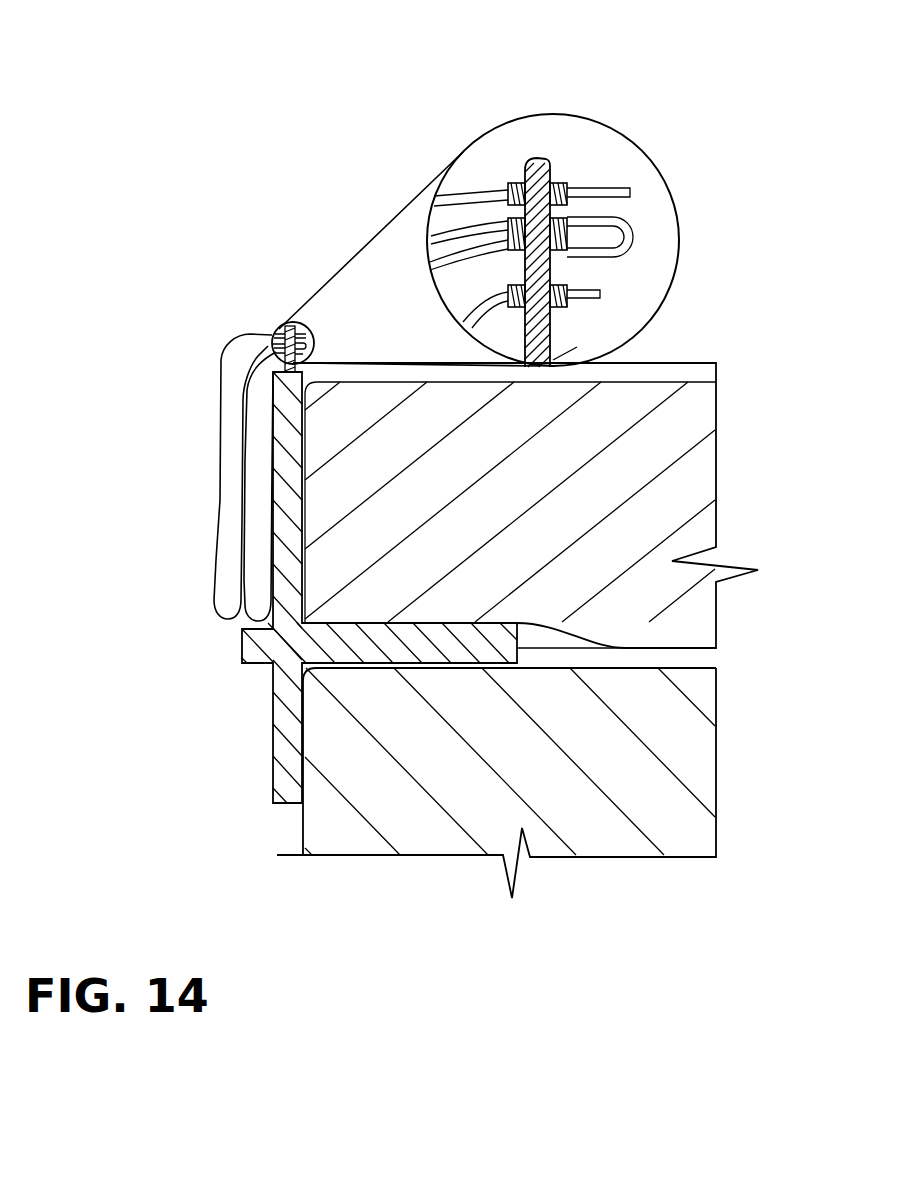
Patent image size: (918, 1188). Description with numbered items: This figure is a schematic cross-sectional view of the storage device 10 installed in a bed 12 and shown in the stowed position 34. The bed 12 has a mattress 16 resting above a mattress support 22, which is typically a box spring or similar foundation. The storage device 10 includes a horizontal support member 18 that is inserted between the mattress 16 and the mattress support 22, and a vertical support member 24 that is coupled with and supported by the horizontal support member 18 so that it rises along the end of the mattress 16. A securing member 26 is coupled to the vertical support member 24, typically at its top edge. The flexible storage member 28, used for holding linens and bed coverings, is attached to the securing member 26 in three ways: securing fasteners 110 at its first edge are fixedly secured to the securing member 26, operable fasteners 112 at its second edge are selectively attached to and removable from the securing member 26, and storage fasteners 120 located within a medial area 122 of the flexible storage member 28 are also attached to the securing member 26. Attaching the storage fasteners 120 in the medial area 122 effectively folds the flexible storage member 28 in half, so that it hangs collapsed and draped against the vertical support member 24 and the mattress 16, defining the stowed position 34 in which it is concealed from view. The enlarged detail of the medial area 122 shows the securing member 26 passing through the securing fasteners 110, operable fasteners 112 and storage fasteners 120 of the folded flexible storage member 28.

The storage device 10 is at (465, 587).
The bed 12 is at (647, 807).
The mattress 16 is at (553, 507).
The horizontal support member 18 is at (490, 648).
The mattress support 22 is at (507, 705).
The vertical support member 24 is at (292, 493).
The securing member 26 is at (548, 160).
The flexible storage member 28 is at (487, 196).
The stowed position 34 is at (389, 340).
The securing fastener 110 is at (570, 308).
The operable fastener 112 is at (571, 184).
The storage fastener 120 is at (570, 251).
The medial area 122 is at (314, 342).